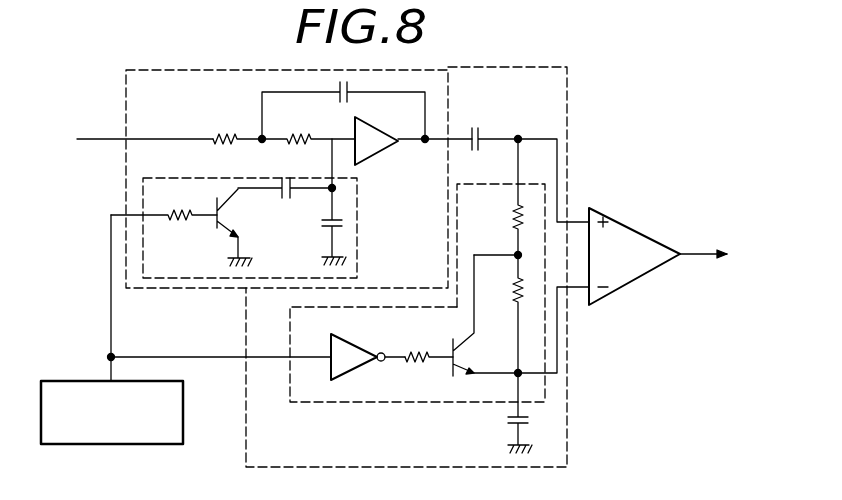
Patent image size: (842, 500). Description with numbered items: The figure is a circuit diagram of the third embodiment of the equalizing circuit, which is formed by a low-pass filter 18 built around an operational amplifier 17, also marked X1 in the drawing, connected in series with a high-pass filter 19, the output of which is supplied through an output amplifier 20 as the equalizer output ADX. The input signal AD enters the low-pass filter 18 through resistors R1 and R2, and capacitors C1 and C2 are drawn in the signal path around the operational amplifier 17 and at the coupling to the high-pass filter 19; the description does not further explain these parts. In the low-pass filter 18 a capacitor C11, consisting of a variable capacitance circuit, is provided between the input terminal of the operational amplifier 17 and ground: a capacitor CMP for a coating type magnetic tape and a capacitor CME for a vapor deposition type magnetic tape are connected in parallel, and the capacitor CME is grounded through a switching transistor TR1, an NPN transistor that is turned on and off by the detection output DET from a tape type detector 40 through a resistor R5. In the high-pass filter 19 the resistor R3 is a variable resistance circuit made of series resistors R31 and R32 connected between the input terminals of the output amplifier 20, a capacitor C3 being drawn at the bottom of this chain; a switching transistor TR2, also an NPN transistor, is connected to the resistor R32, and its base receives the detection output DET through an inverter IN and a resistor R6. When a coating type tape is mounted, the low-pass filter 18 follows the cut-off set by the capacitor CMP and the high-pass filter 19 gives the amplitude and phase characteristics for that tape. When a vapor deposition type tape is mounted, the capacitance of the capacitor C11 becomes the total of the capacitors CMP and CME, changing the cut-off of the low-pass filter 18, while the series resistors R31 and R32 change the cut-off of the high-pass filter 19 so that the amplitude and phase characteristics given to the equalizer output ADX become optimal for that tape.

The low-pass filter 18 is at (122, 168).
The high-pass filter 19 is at (570, 122).
The operational amplifier 17 is at (380, 157).
The output amplifier 20 is at (643, 228).
The tape type detector 40 is at (185, 410).
The resistor R1 is at (217, 148).
The resistor R2 is at (287, 148).
The resistor R3 is at (310, 407).
The resistor R5 is at (176, 218).
The resistor R6 is at (410, 359).
The series resistor R31 is at (512, 212).
The series resistor R32 is at (517, 302).
The capacitor C1 is at (338, 99).
The capacitor C2 is at (480, 134).
The capacitor C3 is at (512, 426).
The capacitor C11 is at (360, 258).
The capacitor for vapor deposition type magnetic tape CME is at (284, 193).
The capacitor for coating type magnetic tape CMP is at (320, 233).
The switching transistor TR1 is at (213, 224).
The switching transistor TR2 is at (451, 356).
The amplifier X1 is at (413, 141).
The inverter IN is at (355, 368).
The audio input signal AD is at (93, 139).
The detection output DET is at (108, 372).
The equalizer output ADX is at (692, 257).